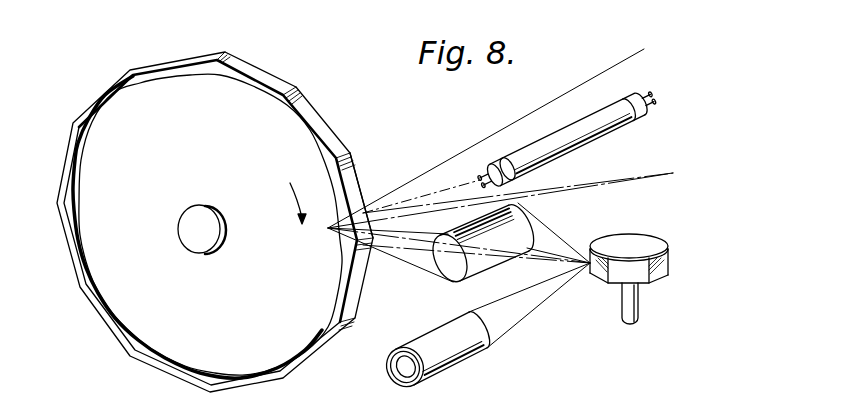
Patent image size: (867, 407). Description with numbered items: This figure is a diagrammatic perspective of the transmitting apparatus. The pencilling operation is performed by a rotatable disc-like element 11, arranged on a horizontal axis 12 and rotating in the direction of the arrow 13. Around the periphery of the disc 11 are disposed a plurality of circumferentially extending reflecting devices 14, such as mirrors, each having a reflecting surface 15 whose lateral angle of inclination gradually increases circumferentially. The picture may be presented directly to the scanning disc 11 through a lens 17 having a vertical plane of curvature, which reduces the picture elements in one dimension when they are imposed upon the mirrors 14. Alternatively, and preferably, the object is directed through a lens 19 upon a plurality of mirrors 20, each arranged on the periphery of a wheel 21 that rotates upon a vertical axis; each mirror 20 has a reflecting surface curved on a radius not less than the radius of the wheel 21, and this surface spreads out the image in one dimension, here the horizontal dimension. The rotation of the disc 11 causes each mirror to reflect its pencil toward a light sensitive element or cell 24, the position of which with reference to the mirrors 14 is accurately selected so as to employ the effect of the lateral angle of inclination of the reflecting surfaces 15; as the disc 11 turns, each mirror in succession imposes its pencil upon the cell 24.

The rotatable disc-like element 11 is at (207, 226).
The horizontal axis 12 is at (200, 236).
The arrow 13 is at (285, 205).
The reflecting devices 14 is at (95, 310).
The reflecting surface 15 is at (360, 190).
The lens 17 is at (530, 225).
The lens 19 is at (455, 340).
The mirrors 20 is at (633, 275).
The wheel 21 is at (653, 245).
The light sensitive element 24 is at (612, 131).